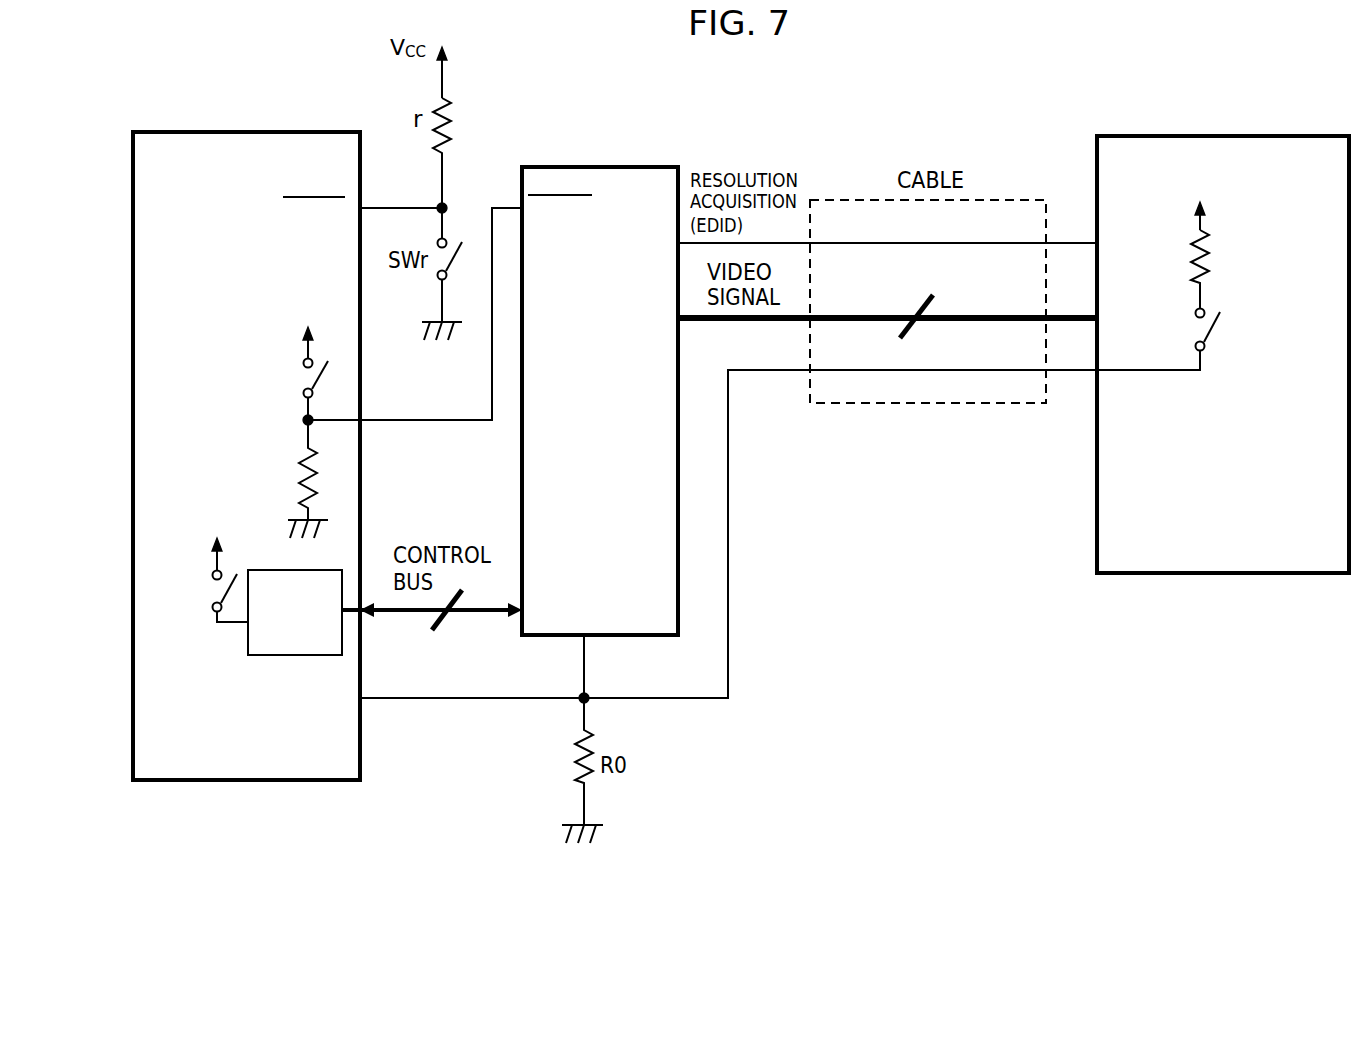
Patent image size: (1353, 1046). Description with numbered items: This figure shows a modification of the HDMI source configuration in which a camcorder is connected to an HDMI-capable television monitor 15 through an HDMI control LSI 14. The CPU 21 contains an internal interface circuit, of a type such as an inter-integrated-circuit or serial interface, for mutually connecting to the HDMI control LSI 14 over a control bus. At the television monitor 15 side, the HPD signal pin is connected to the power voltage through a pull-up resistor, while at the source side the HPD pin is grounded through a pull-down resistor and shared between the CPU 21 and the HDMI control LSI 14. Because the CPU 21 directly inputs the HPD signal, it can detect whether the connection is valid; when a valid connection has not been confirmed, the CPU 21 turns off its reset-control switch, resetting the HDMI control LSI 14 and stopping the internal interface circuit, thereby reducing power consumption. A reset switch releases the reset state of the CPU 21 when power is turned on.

The HDMI control LSI 14 is at (600, 165).
The television monitor 15 is at (1227, 573).
The CPU 21 is at (250, 780).